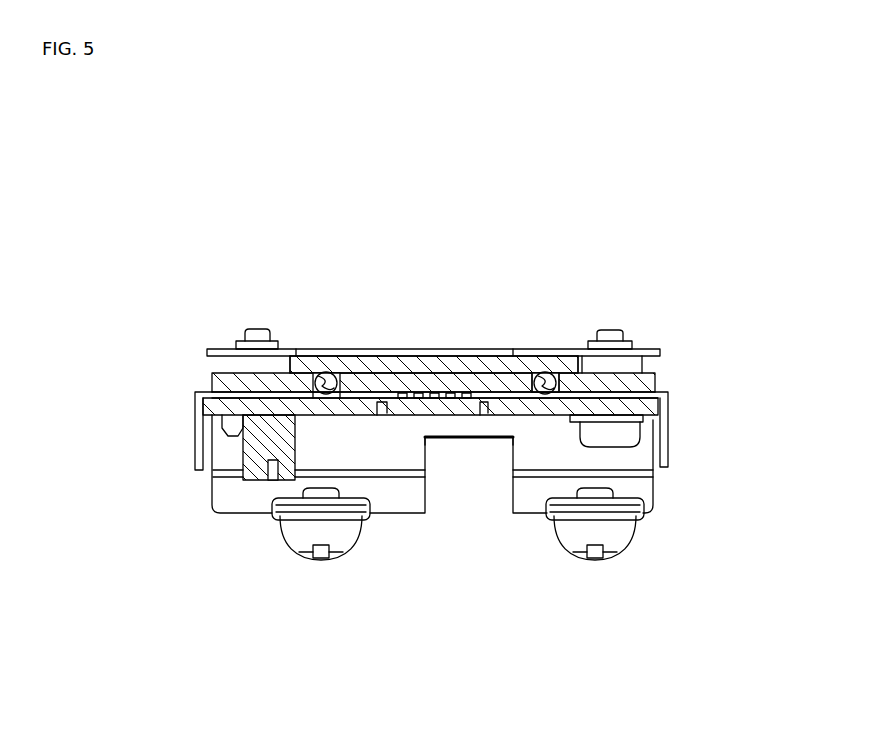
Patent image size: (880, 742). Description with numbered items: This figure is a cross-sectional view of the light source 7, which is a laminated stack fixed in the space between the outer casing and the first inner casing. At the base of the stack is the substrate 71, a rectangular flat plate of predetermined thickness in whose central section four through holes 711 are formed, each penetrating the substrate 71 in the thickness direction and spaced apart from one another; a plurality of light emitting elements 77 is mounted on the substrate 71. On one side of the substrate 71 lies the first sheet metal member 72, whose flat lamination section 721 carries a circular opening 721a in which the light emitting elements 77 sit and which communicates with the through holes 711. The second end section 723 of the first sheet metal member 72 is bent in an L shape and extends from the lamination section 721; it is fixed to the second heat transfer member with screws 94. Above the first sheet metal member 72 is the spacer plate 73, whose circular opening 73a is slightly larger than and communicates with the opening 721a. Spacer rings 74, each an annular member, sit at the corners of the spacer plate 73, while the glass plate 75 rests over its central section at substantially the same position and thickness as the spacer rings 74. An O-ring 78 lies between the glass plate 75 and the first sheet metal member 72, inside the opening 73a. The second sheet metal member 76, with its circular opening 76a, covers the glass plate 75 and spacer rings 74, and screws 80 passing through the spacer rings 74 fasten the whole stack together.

The light source 7 is at (690, 302).
The substrate 71 is at (207, 409).
The first sheet metal member 72 is at (637, 397).
The spacer plate 73 is at (222, 379).
The opening 73a is at (545, 372).
The spacer ring 74 is at (240, 363).
The glass plate 75 is at (487, 372).
The second sheet metal member 76 is at (296, 349).
The opening 76a is at (513, 350).
The light emitting element 77 is at (405, 393).
The O-ring 78 is at (324, 372).
The screw 80 is at (235, 436).
The screw 94 is at (293, 541).
The through hole 711 is at (384, 412).
The lamination section 721 is at (629, 393).
The opening 721a is at (345, 392).
The second end section 723 is at (533, 452).